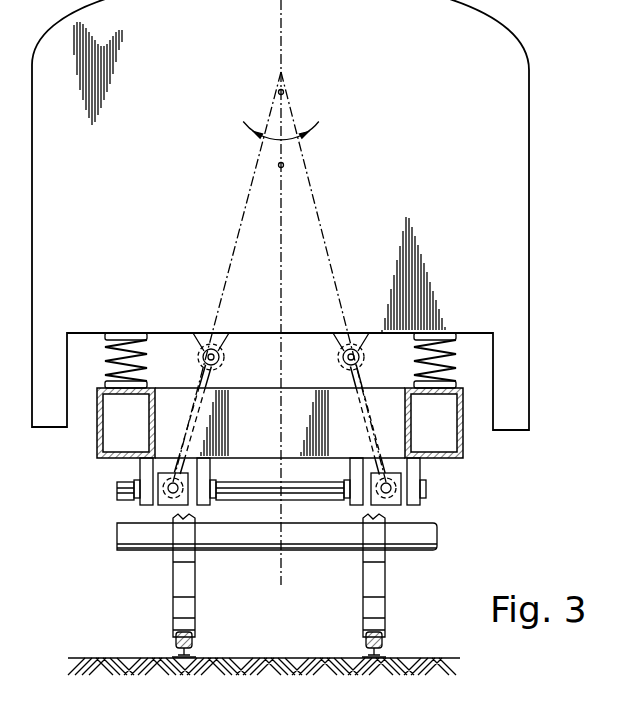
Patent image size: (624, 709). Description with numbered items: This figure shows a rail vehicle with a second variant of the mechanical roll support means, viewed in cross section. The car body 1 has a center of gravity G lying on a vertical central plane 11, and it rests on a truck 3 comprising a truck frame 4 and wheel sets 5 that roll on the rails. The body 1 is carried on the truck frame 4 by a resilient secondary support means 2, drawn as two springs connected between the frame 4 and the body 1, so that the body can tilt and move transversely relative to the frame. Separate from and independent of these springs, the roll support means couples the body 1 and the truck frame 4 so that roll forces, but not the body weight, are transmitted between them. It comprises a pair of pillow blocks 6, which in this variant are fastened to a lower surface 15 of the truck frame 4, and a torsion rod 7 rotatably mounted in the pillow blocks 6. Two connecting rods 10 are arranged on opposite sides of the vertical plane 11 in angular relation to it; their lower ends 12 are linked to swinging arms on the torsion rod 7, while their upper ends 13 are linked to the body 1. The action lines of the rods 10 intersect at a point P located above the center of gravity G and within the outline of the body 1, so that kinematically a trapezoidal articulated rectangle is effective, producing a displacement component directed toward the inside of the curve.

The car body 1 is at (512, 117).
The secondary support means 2 is at (138, 357).
The truck 3 is at (106, 469).
The truck frame 4 is at (463, 445).
The wheel sets 5 is at (153, 569).
The pillow blocks 6 is at (213, 470).
The torsion rod 7 is at (247, 492).
The connecting elements 10 is at (208, 386).
The vertical central plane 11 is at (285, 5).
The lower ends 12 is at (176, 506).
The upper ends 13 is at (220, 361).
The lower surface 15 is at (293, 463).
The intersection point P is at (284, 90).
The center of gravity G is at (283, 168).